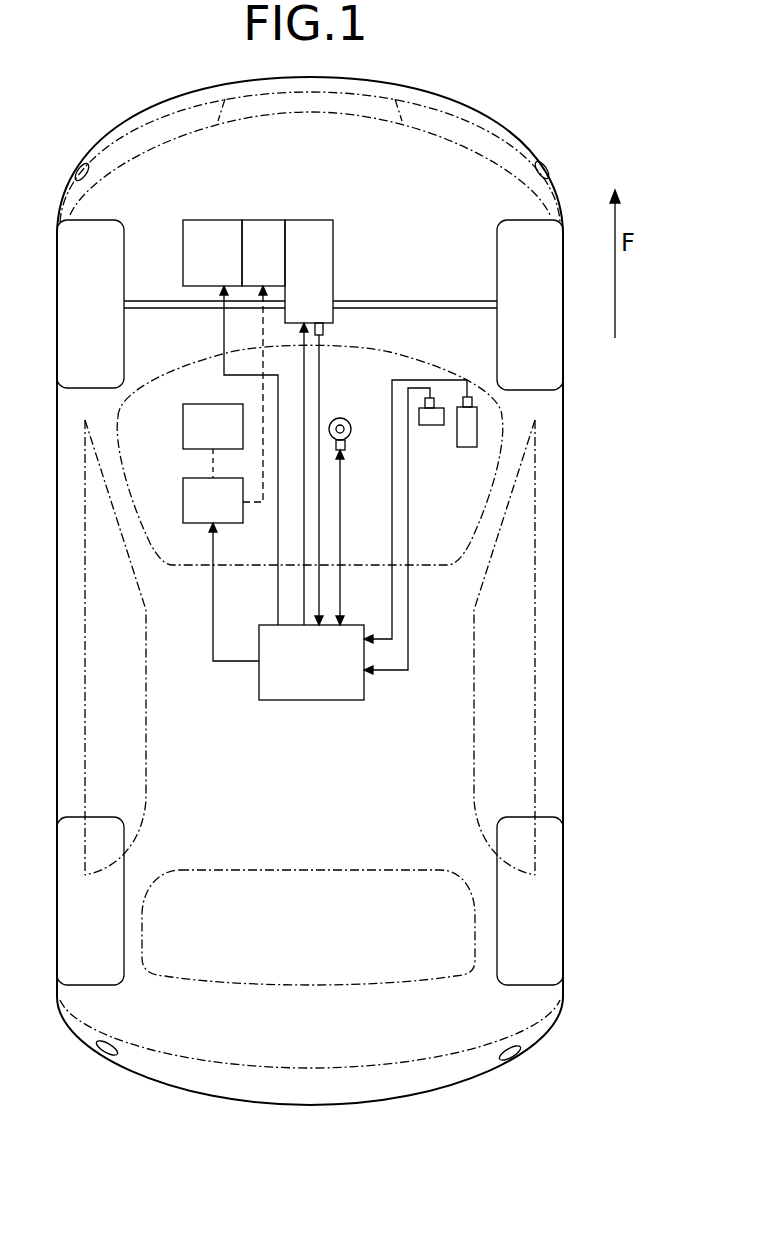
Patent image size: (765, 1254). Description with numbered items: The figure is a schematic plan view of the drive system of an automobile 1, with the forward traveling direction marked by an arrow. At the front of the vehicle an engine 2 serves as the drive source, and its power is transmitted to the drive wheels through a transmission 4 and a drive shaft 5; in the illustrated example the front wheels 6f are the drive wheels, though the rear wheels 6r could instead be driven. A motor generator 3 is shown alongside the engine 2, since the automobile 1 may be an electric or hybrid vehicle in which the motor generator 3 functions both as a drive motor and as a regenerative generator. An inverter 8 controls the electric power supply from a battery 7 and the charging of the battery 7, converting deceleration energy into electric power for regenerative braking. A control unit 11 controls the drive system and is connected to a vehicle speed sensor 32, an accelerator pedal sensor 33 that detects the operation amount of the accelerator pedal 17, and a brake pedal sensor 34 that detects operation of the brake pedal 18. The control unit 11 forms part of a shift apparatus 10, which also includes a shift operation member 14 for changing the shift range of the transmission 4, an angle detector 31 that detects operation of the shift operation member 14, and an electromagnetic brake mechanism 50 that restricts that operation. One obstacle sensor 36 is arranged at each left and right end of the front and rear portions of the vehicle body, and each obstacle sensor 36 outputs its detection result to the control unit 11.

The automobile 1 is at (527, 140).
The engine 2 is at (229, 220).
The motor generator 3 is at (273, 220).
The transmission 4 is at (315, 220).
The drive shaft 5 is at (414, 301).
The front wheels 6f is at (124, 341).
The rear wheels 6r is at (124, 868).
The battery 7 is at (183, 428).
The inverter 8 is at (183, 490).
The shift apparatus 10 is at (393, 720).
The control unit 11 is at (325, 700).
The shift operation member 14 is at (339, 418).
The accelerator pedal 17 is at (477, 435).
The brake pedal 18 is at (439, 427).
The angle detector 31 is at (347, 446).
The vehicle speed sensor 32 is at (325, 330).
The accelerator pedal sensor 33 is at (474, 402).
The brake pedal sensor 34 is at (437, 399).
The obstacle sensor 36 is at (90, 180).
The electromagnetic brake mechanism 50 is at (346, 423).